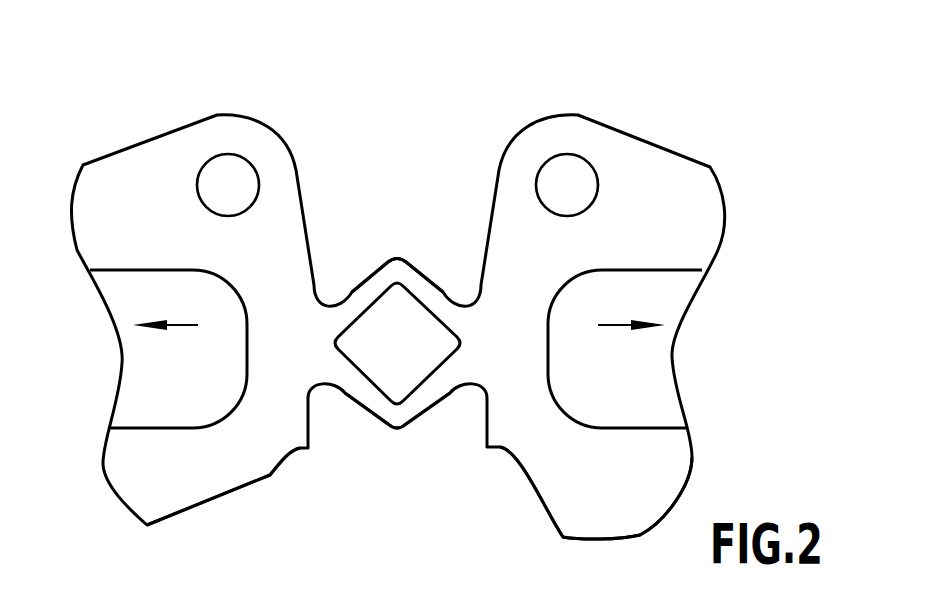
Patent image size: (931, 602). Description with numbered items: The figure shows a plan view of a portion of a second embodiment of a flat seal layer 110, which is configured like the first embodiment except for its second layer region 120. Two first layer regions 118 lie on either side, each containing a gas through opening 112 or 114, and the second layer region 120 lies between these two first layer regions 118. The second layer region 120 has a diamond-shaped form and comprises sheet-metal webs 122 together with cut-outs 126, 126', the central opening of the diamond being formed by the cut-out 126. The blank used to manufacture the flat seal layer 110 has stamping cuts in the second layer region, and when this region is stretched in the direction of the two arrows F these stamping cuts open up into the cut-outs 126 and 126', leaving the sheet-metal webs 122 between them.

The flat seal layer 110 is at (258, 96).
The gas through opening 112 is at (150, 428).
The gas through opening 114 is at (637, 428).
The first layer region 118 is at (207, 475).
The second layer region 120 is at (402, 325).
The sheet-metal web 122 is at (362, 288).
The cut-out 126 is at (397, 343).
The cut-out 126' is at (402, 349).